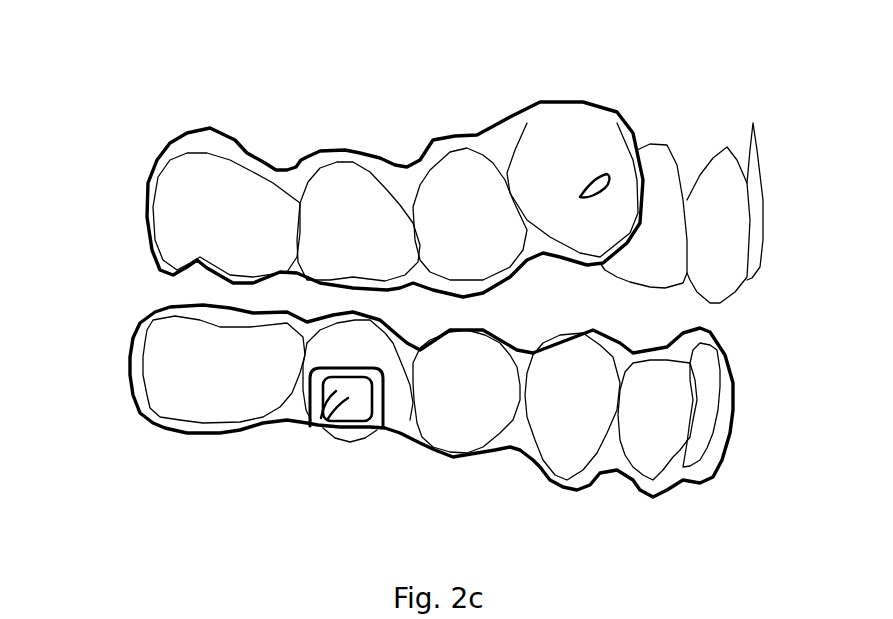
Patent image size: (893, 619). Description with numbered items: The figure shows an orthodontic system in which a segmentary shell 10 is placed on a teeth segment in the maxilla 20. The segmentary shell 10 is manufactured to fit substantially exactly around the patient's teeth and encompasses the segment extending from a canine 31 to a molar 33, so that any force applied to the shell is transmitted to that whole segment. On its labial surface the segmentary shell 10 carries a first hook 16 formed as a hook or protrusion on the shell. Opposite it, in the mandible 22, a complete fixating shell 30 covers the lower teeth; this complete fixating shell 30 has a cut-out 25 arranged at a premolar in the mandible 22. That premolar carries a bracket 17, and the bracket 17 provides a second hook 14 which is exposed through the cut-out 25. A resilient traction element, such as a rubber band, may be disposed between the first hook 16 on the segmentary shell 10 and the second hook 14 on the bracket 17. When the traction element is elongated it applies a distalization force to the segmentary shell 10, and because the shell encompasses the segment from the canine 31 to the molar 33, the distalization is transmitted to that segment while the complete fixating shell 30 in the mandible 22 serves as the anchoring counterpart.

The segmentary shell 10 is at (395, 174).
The maxilla 20 is at (401, 218).
The molar 33 is at (192, 163).
The canine 31 is at (572, 148).
The hook 16 is at (718, 232).
The mandible 22 is at (390, 401).
The complete fixating shell 30 is at (765, 405).
The second hook 14 is at (314, 434).
The cut-out 25 is at (363, 442).
The bracket 17 is at (346, 420).